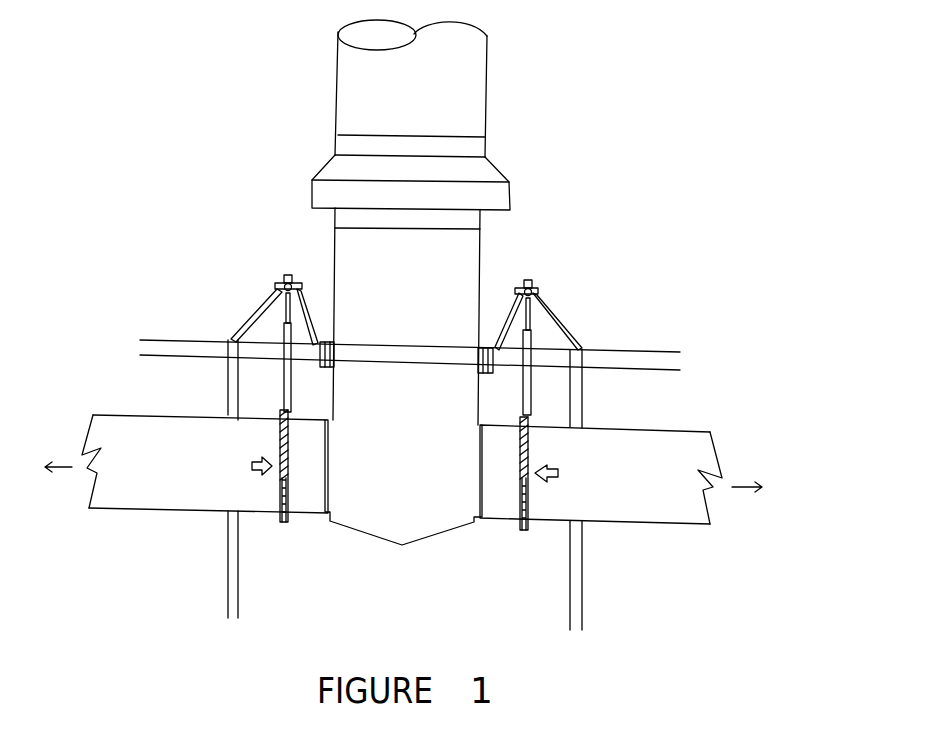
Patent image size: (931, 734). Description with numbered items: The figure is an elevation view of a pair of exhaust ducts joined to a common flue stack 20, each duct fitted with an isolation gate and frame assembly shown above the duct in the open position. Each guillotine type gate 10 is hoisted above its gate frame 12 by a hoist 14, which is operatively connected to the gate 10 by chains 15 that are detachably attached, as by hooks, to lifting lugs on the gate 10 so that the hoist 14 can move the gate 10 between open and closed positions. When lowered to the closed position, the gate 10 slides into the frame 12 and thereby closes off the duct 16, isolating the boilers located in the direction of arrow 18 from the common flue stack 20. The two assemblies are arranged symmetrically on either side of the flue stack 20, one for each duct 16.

The guillotine type gate 10 is at (284, 380).
The gate frame 12 is at (288, 490).
The hoist 14 is at (282, 282).
The chains 15 is at (291, 306).
The duct 16 is at (170, 510).
The arrow 18 is at (405, 476).
The common flue stack 20 is at (487, 78).